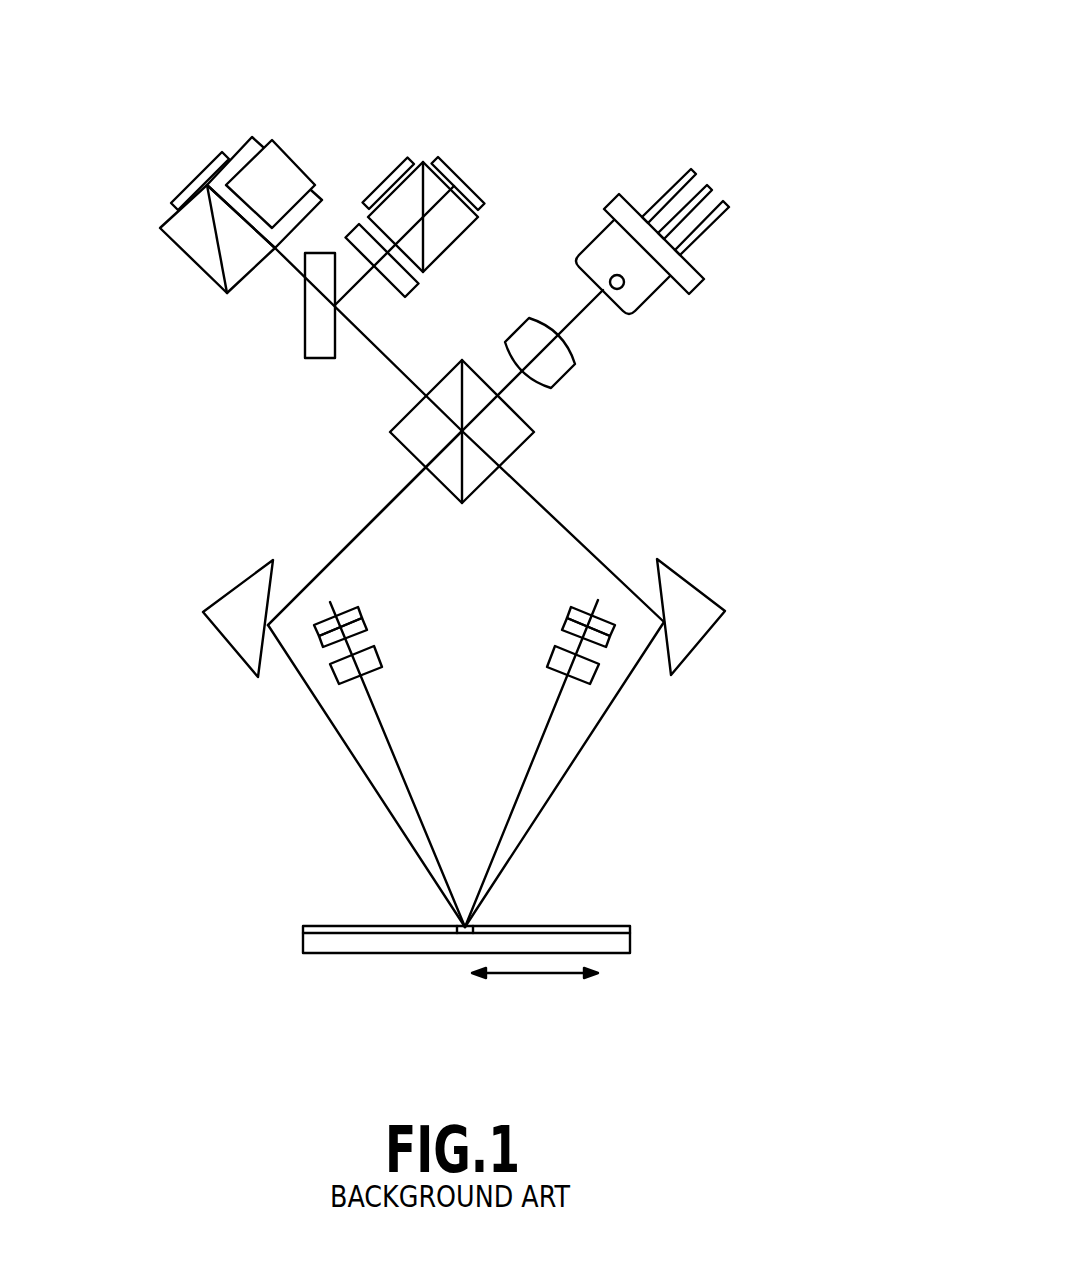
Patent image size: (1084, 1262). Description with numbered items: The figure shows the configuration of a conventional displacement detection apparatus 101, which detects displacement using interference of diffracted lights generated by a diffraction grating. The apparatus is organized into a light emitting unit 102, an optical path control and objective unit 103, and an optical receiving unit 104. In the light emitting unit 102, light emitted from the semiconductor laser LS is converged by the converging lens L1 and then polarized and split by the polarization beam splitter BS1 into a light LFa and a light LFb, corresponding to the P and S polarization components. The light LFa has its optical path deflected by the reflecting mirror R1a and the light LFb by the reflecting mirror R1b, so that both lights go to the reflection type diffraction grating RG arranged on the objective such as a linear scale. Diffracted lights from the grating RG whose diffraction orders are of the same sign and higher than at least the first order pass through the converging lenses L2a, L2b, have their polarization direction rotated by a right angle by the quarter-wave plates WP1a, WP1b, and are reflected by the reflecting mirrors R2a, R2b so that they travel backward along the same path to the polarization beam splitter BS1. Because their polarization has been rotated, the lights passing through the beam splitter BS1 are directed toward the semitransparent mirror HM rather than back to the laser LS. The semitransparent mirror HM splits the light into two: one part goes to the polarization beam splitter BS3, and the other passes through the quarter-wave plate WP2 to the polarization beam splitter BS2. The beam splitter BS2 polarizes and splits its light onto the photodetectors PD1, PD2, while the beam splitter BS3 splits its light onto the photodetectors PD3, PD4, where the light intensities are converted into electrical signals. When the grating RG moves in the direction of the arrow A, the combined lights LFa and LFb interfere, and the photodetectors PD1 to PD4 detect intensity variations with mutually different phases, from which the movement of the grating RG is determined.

The displacement detection apparatus 101 is at (690, 78).
The light emitting unit 102 is at (691, 258).
The optical path control and objective unit 103 is at (752, 801).
The optical receiving unit 104 is at (178, 207).
The semiconductor laser LS is at (643, 303).
The converging lens L1 is at (578, 365).
The polarization beam splitter BS1 is at (405, 420).
The polarization beam splitter BS2 is at (450, 240).
The polarization beam splitter BS3 is at (188, 250).
The semitransparent mirror HM is at (312, 345).
The λ/4 wave plate WP2 is at (352, 230).
The photodetector PD1 is at (452, 167).
The photodetector PD2 is at (398, 173).
The photodetector PD3 is at (287, 162).
The photodetector PD4 is at (196, 177).
The light LFa is at (578, 533).
The light LFb is at (352, 533).
The reflecting mirror R1a is at (694, 587).
The reflecting mirror R1b is at (236, 587).
The reflecting mirror R2a is at (579, 610).
The reflecting mirror R2b is at (350, 610).
The λ/4 wave plate WP1a is at (610, 640).
The λ/4 wave plate WP1b is at (319, 640).
The converging lens L2a is at (590, 685).
The converging lens L2b is at (339, 685).
The reflection type diffraction grating RG is at (577, 925).
The arrow A is at (535, 991).